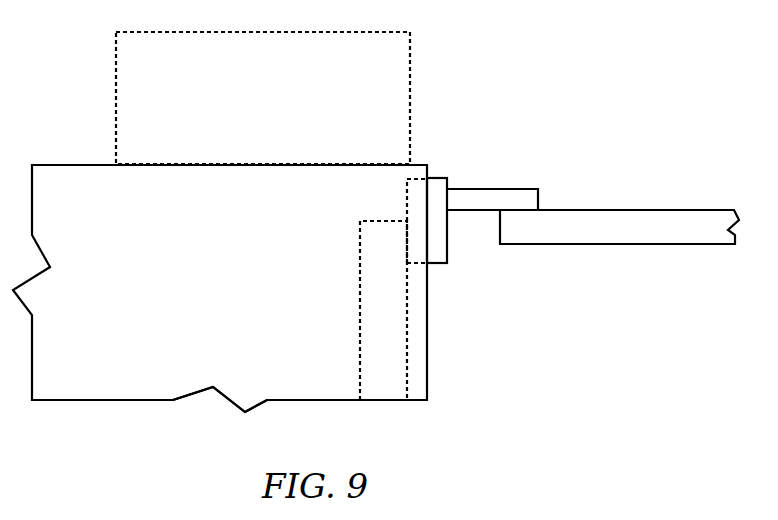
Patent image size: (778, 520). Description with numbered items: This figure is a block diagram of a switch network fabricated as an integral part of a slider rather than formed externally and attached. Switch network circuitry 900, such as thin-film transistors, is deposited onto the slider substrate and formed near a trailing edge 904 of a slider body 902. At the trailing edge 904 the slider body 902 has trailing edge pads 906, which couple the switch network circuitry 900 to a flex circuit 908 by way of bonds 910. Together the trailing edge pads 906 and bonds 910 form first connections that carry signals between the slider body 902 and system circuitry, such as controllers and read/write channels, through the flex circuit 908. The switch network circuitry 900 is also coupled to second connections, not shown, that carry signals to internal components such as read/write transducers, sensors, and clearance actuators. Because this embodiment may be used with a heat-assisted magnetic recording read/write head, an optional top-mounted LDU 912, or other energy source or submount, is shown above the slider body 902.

The switch network circuitry 900 is at (360, 308).
The slider body 902 is at (175, 400).
The trailing edge 904 is at (428, 372).
The trailing edge pads 906 is at (442, 263).
The flex circuit 908 is at (608, 244).
The bonds 910 is at (538, 197).
The top-mounted LDU 912 is at (116, 67).